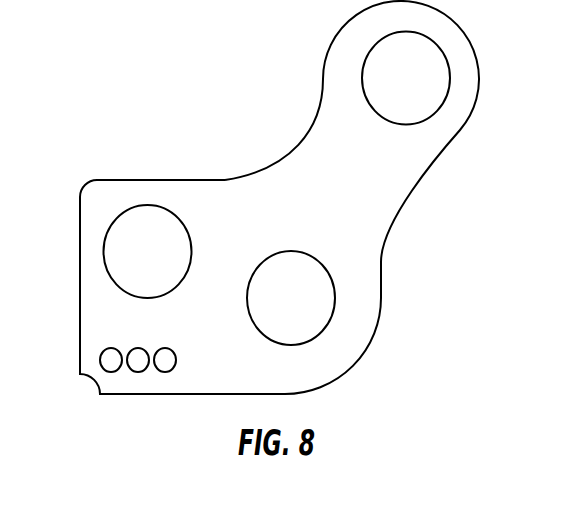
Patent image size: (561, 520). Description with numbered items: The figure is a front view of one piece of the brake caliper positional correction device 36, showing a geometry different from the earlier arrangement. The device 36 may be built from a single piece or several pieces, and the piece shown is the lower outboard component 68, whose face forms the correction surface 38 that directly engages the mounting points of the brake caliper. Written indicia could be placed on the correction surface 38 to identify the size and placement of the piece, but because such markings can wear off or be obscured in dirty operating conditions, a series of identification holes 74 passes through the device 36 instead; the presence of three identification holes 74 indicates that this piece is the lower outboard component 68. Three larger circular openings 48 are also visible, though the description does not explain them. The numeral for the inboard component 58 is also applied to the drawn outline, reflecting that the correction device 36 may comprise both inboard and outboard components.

The brake caliper positional correction device 36 is at (113, 46).
The correction surface 38 is at (369, 218).
The apertures 48 is at (418, 92).
The inboard component 58 is at (90, 320).
The lower outboard component 68 is at (80, 230).
The identification holes 74 is at (138, 372).